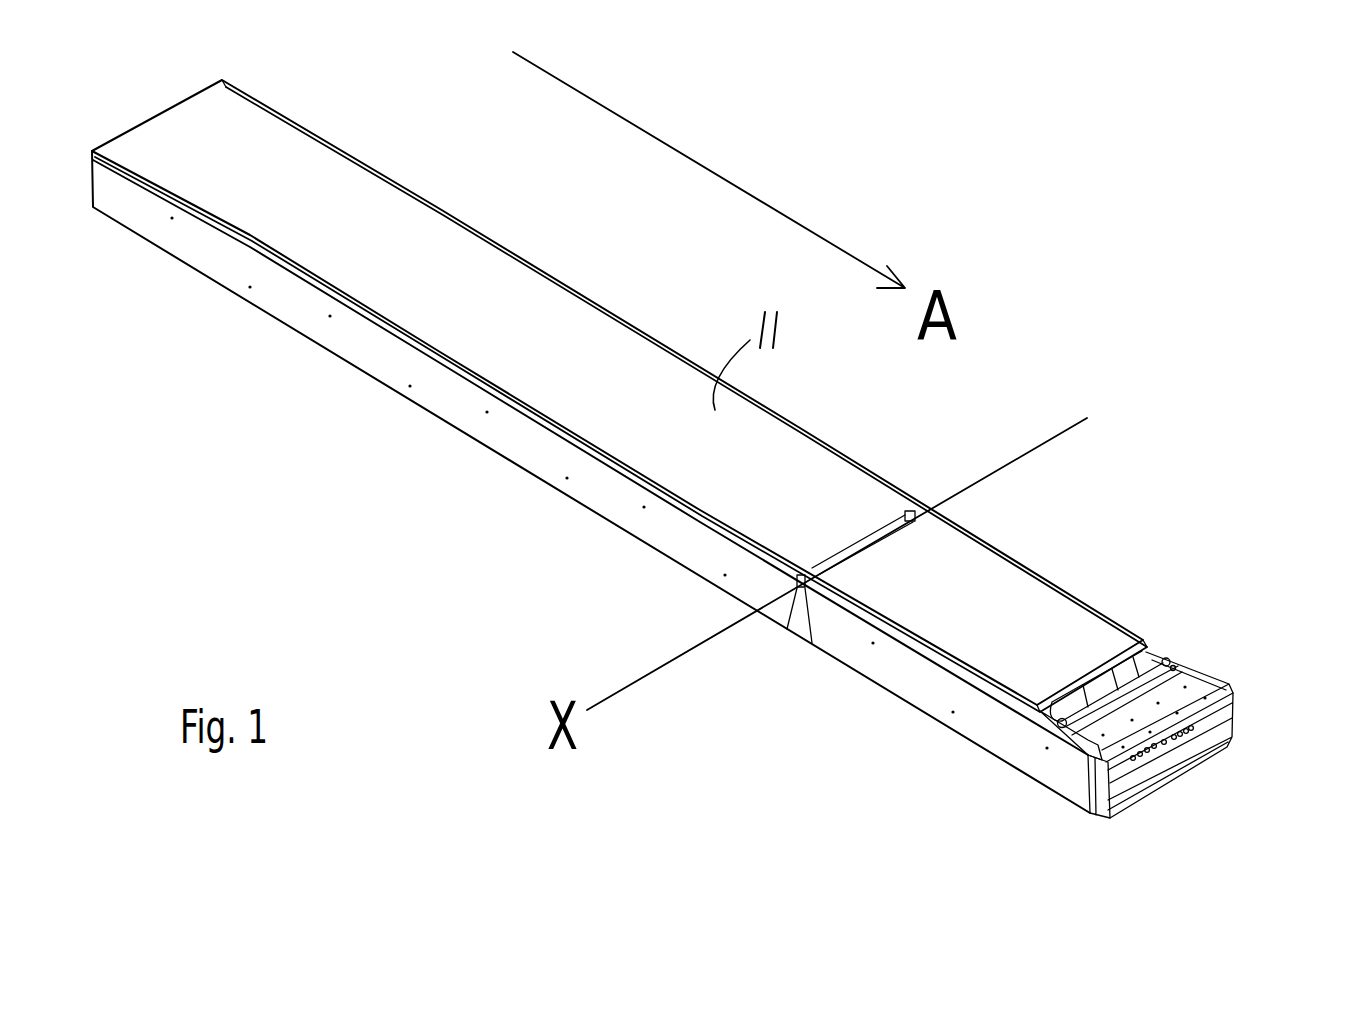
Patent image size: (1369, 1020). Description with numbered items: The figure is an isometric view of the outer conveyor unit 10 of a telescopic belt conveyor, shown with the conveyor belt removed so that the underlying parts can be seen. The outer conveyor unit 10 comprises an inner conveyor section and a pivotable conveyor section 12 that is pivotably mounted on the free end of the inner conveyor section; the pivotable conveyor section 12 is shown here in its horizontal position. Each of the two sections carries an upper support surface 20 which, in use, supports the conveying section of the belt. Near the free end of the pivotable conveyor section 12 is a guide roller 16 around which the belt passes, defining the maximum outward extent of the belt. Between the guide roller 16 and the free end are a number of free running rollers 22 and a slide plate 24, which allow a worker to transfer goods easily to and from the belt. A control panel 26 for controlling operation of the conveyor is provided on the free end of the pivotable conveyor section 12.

The outer conveyor unit 10 is at (366, 354).
The pivotable conveyor section 12 is at (995, 753).
The guide roller 16 is at (1150, 650).
The upper support surface 20 is at (542, 308).
The free running rollers 22 is at (1178, 672).
The slide plate 24 is at (1217, 680).
The control panel 26 is at (1178, 746).